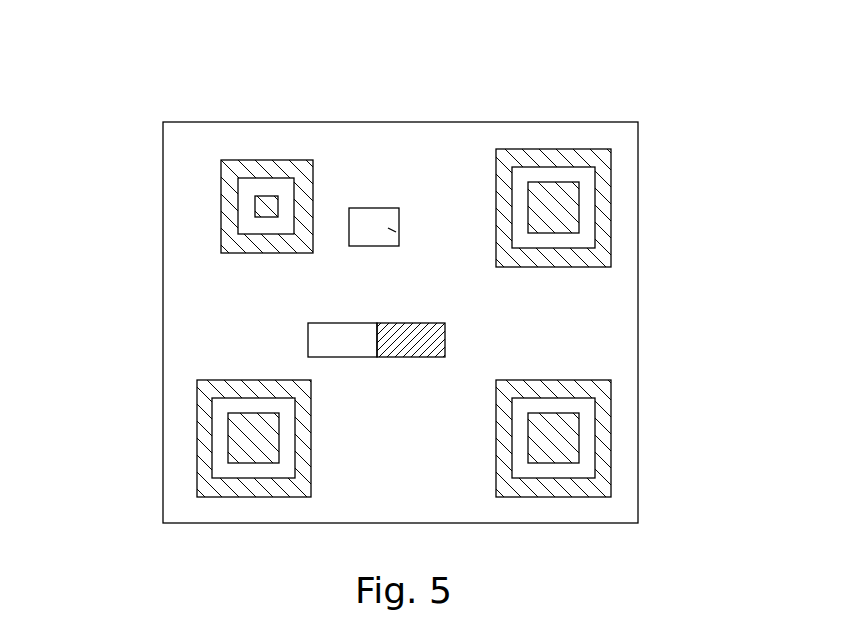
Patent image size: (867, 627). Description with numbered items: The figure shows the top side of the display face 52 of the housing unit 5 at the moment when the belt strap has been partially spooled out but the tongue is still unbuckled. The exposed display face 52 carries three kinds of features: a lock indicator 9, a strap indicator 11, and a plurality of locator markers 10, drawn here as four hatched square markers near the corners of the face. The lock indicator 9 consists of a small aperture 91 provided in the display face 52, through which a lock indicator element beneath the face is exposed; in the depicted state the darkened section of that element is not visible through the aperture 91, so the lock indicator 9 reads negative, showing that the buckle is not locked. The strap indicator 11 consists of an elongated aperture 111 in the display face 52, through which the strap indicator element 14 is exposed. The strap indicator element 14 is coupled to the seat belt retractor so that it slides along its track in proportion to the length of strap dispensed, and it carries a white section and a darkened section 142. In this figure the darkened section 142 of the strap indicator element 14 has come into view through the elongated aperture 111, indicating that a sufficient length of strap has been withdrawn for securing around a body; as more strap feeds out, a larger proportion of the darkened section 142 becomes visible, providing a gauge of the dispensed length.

The housing unit 5 is at (163, 173).
The display face 52 is at (260, 158).
The lock indicator 9 is at (382, 207).
The aperture 91 is at (388, 228).
The locator markers 10 is at (612, 193).
The strap indicator 11 is at (383, 431).
The elongated aperture 111 is at (332, 342).
The strap indicator element 14 is at (537, 451).
The darkened section 142 is at (410, 358).